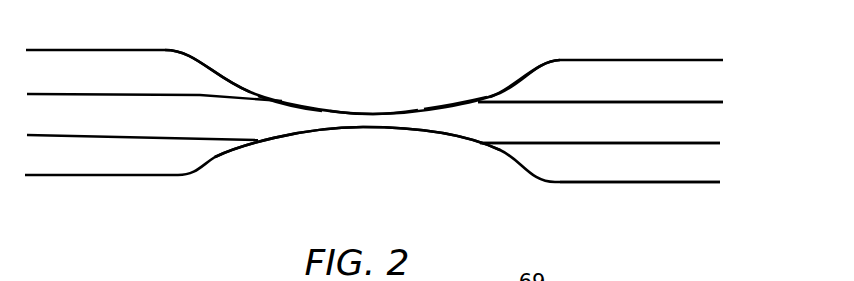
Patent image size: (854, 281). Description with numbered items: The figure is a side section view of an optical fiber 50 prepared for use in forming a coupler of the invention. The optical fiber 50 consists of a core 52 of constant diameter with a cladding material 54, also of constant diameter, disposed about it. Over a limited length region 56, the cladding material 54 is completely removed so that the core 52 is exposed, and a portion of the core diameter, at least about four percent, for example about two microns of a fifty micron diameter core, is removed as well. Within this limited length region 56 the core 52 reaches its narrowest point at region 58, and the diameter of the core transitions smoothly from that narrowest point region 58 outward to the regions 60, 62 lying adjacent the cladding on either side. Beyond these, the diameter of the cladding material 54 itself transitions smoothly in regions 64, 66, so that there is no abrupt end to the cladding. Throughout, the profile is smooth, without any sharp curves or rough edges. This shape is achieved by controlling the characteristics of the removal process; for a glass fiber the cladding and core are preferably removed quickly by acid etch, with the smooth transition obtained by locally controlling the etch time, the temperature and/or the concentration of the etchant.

The optical fiber 50 is at (374, 91).
The core 52 is at (568, 134).
The cladding material 54 is at (628, 167).
The limited length region 56 is at (357, 172).
The narrowest point region 58 is at (374, 86).
The core transition region adjacent cladding 60 is at (290, 79).
The core transition region adjacent cladding 62 is at (455, 81).
The cladding transition region 64 is at (213, 58).
The cladding transition region 66 is at (522, 62).